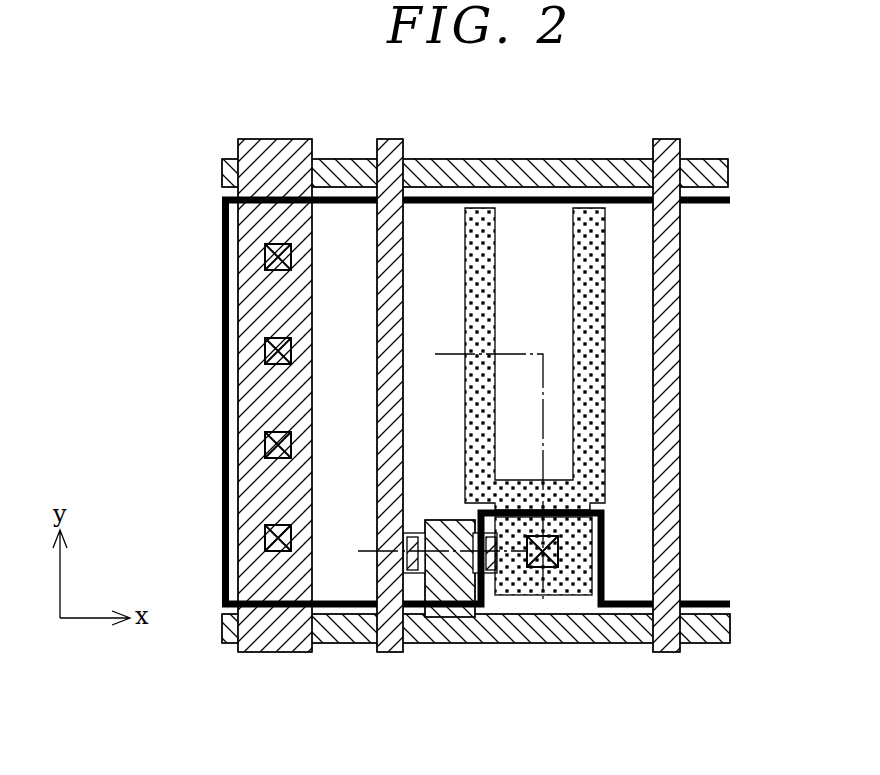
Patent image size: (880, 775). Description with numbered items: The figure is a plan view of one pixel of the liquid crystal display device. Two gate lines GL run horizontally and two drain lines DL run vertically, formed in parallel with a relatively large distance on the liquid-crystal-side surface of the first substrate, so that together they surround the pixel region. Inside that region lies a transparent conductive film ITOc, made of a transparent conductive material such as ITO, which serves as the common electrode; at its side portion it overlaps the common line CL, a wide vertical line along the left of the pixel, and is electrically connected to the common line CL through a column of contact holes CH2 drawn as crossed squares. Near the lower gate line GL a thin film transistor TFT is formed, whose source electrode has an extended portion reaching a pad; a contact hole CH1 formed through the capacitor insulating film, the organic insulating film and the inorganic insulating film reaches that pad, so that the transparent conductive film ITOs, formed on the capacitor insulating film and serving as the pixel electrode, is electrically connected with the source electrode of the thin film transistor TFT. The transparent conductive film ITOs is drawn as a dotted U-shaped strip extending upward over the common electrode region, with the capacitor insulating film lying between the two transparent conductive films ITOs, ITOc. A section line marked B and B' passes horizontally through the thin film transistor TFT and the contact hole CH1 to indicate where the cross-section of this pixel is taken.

The gate line GL is at (728, 172).
The drain line DL is at (387, 141).
The common line CL is at (283, 652).
The thin film transistor TFT is at (451, 570).
The transparent conductive film serving as the pixel electrode ITOs is at (605, 320).
The transparent conductive film serving as the common electrode ITOc is at (704, 600).
The contact hole CH1 is at (558, 551).
The contact hole CH2 is at (265, 258).
The section line mark B is at (478, 471).
The section line mark B' is at (430, 549).